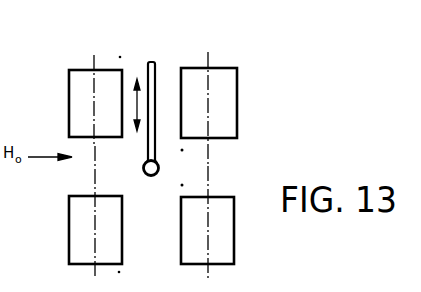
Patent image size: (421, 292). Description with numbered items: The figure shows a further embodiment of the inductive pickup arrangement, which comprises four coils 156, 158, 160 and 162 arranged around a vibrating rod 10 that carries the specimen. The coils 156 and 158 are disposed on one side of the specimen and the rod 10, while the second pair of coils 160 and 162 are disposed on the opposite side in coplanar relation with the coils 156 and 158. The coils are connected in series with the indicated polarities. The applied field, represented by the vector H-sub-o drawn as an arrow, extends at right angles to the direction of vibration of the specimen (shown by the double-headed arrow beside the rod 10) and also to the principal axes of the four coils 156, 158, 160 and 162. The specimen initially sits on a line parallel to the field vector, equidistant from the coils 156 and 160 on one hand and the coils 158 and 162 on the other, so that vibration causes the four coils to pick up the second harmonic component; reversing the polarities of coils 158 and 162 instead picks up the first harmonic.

The rod 10 is at (157, 72).
The coil 156 is at (82, 97).
The coil 158 is at (69, 218).
The coil 160 is at (237, 98).
The coil 162 is at (234, 233).